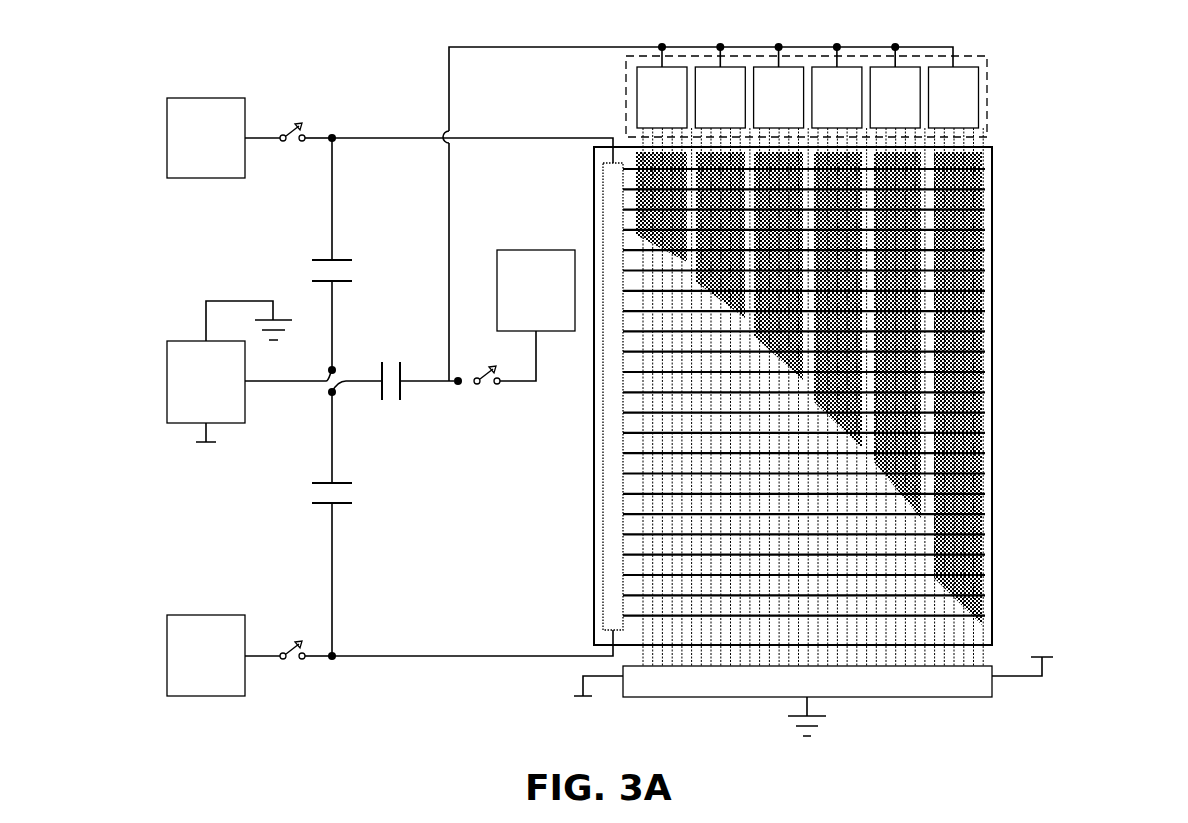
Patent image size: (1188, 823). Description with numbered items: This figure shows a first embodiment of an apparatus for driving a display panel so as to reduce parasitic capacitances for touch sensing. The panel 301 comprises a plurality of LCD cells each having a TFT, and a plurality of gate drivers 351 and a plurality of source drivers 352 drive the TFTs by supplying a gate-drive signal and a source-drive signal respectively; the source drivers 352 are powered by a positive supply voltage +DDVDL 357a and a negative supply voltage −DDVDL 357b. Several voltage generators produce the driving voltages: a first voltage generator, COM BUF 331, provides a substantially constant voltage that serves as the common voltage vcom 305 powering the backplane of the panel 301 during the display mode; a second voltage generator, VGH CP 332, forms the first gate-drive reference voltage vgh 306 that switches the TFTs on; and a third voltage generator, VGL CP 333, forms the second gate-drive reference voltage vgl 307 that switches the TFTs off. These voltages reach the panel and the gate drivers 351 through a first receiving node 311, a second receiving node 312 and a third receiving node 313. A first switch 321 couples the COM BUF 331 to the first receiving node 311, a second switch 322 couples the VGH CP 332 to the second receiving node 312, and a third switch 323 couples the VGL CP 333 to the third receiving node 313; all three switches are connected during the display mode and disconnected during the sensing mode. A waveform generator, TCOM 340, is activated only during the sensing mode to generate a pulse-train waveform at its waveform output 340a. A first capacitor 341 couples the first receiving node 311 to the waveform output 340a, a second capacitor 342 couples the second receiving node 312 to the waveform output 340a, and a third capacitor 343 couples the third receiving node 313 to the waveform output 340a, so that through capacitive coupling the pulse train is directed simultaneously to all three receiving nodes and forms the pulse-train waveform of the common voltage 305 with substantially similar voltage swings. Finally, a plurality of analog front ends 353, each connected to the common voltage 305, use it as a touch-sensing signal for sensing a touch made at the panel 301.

The panel 301 is at (820, 480).
The common voltage 305 is at (838, 38).
The first gate-drive reference voltage 306 is at (540, 122).
The second gate-drive reference voltage 307 is at (525, 636).
The first receiving node 311 is at (591, 52).
The second receiving node 312 is at (527, 142).
The third receiving node 313 is at (487, 657).
The first switch 321 is at (497, 418).
The second switch 322 is at (299, 113).
The third switch 323 is at (297, 667).
The first voltage generator 331 is at (528, 259).
The second voltage generator 332 is at (176, 152).
The third voltage generator 333 is at (165, 670).
The waveform generator 340 is at (170, 403).
The waveform output 340a is at (265, 388).
The first capacitor 341 is at (390, 400).
The second capacitor 342 is at (318, 270).
The third capacitor 343 is at (318, 496).
The gate drivers 351 is at (614, 587).
The source drivers 352 is at (927, 692).
The analog front ends 353 is at (990, 95).
The positive supply voltage 357a is at (1078, 647).
The negative supply voltage 357b is at (615, 712).